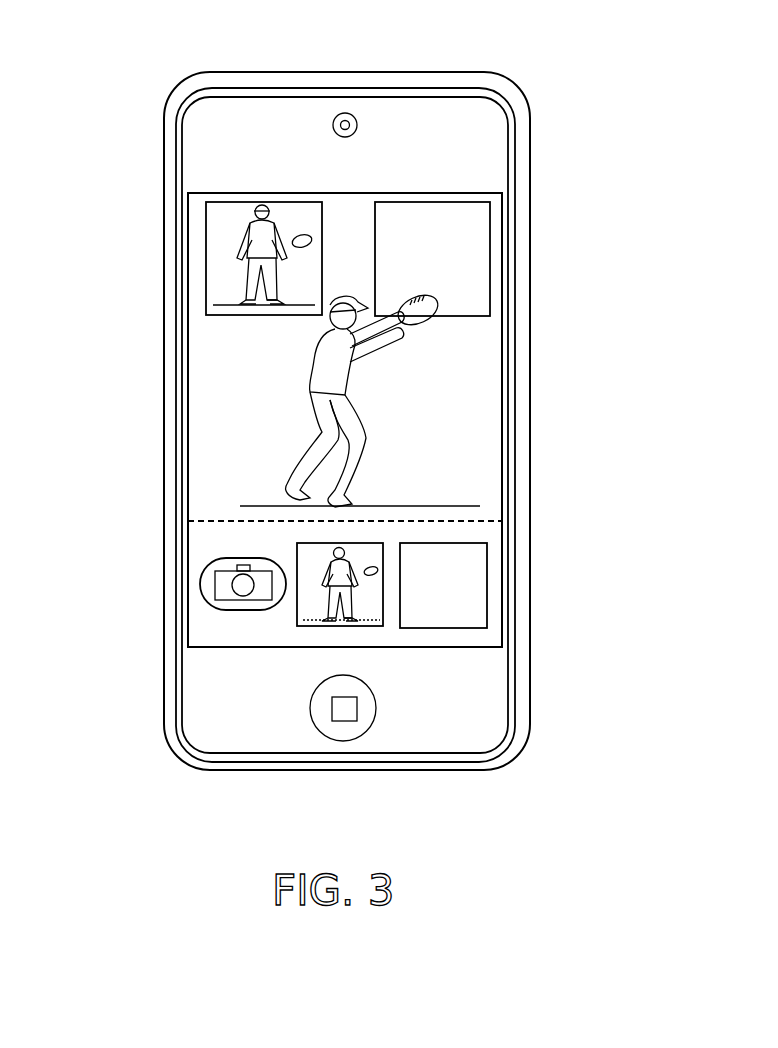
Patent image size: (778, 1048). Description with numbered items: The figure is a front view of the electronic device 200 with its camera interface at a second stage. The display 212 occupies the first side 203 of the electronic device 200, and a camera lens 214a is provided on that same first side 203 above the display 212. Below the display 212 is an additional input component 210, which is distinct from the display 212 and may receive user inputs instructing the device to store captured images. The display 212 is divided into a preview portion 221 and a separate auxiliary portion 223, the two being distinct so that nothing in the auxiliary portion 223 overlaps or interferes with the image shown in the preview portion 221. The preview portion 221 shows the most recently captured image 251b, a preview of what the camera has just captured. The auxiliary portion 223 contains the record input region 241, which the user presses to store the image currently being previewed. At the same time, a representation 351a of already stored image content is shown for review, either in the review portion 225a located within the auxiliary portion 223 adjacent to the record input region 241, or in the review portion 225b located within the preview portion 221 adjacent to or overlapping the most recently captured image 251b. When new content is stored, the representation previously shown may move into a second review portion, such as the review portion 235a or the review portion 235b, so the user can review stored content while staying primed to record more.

The electronic device 200 is at (363, 832).
The first side 203 is at (216, 75).
The additional input component 210 is at (378, 705).
The display 212 is at (188, 203).
The camera lens 214a is at (350, 113).
The preview portion 221 is at (232, 465).
The auxiliary portion 223 is at (196, 537).
The review portion 225a is at (297, 615).
The review portion 225b is at (206, 268).
The review portion 235a is at (487, 573).
The review portion 235b is at (490, 230).
The record input region 241 is at (200, 575).
The most recently captured image 251b is at (307, 357).
The representation 351a is at (268, 305).